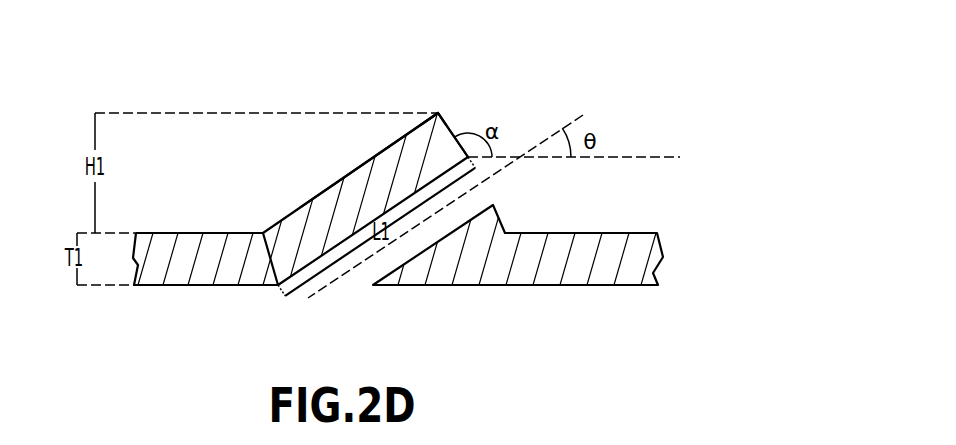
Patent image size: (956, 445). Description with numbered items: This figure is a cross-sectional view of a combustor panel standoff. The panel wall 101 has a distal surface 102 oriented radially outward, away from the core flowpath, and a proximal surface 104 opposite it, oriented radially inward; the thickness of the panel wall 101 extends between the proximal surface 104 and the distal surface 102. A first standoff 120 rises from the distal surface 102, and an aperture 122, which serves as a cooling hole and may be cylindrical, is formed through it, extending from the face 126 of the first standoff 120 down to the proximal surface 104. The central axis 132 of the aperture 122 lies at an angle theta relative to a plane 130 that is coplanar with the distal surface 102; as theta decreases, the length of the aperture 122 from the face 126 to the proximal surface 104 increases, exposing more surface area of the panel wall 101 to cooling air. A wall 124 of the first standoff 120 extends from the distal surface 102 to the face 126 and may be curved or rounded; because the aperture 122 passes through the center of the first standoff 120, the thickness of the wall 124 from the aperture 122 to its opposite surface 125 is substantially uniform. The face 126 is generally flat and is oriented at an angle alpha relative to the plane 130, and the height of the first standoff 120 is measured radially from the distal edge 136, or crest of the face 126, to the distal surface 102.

The panel wall 101 is at (150, 263).
The distal surface 102 is at (202, 233).
The proximal surface 104 is at (545, 287).
The first standoff 120 is at (321, 126).
The aperture 122 is at (299, 303).
The wall 124 is at (312, 217).
The surface 125 is at (378, 153).
The face 126 is at (448, 127).
The plane 130 is at (645, 156).
The central axis 132 is at (333, 283).
The distal edge 136 is at (438, 113).